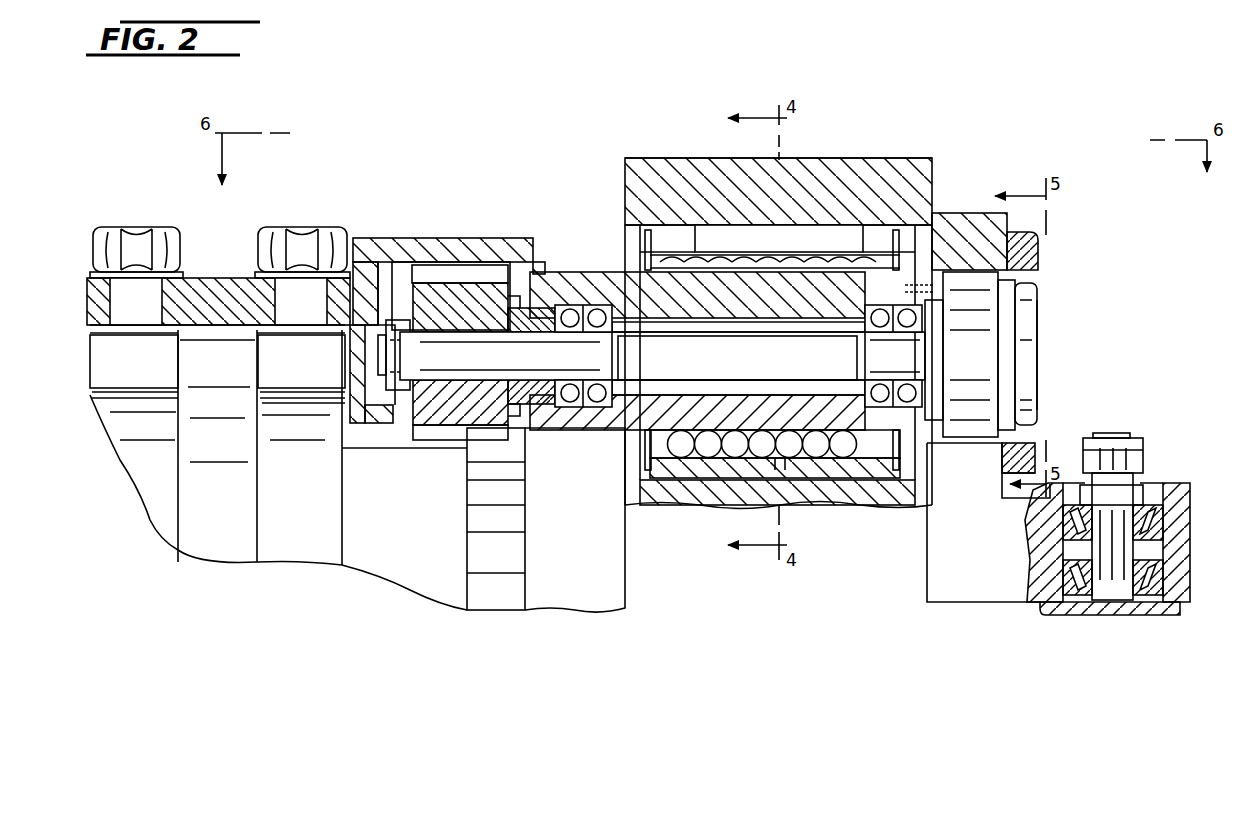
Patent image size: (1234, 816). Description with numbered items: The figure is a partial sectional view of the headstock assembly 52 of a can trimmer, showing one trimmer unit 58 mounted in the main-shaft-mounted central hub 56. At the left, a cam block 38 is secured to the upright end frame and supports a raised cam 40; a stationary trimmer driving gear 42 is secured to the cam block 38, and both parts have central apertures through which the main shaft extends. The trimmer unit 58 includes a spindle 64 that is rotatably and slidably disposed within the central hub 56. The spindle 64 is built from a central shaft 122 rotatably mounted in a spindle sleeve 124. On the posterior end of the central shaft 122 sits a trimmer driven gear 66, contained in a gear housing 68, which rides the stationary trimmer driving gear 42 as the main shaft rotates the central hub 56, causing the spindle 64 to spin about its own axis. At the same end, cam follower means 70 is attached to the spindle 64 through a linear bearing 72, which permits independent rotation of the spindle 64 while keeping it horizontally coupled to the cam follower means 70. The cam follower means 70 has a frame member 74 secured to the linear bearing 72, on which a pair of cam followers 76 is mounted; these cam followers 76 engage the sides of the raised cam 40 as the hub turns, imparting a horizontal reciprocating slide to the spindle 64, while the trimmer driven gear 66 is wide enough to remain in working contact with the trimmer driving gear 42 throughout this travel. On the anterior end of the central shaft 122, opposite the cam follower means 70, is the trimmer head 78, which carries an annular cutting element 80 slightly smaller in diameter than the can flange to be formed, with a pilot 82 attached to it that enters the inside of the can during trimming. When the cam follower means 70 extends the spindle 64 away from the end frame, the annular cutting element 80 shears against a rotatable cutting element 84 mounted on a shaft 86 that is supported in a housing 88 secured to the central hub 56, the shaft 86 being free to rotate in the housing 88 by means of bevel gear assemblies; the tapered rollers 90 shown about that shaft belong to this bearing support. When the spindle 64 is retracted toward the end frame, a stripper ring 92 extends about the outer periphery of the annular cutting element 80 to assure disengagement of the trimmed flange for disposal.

The cam block 38 is at (310, 535).
The raised cam 40 is at (205, 497).
The trimmer driving gear 42 is at (505, 592).
The headstock assembly 52 is at (645, 128).
The central hub 56 is at (850, 182).
The trimmer unit 58 is at (988, 185).
The spindle 64 is at (513, 308).
The trimmer driven gear 66 is at (433, 412).
The gear housing 68 is at (418, 245).
The cam follower means 70 is at (310, 210).
The linear bearing 72 is at (405, 395).
The frame member 74 is at (220, 292).
The cam followers 76 is at (100, 352).
The trimmer head 78 is at (1045, 395).
The annular cutting element 80 is at (1010, 273).
The pilot 82 is at (1025, 332).
The rotatable cutting element 84 is at (1135, 446).
The shaft 86 is at (1128, 480).
The housing 88 is at (1170, 582).
The tapered rollers 90 is at (1165, 535).
The stripper ring 92 is at (1025, 243).
The central shaft 122 is at (538, 345).
The spindle sleeve 124 is at (655, 318).